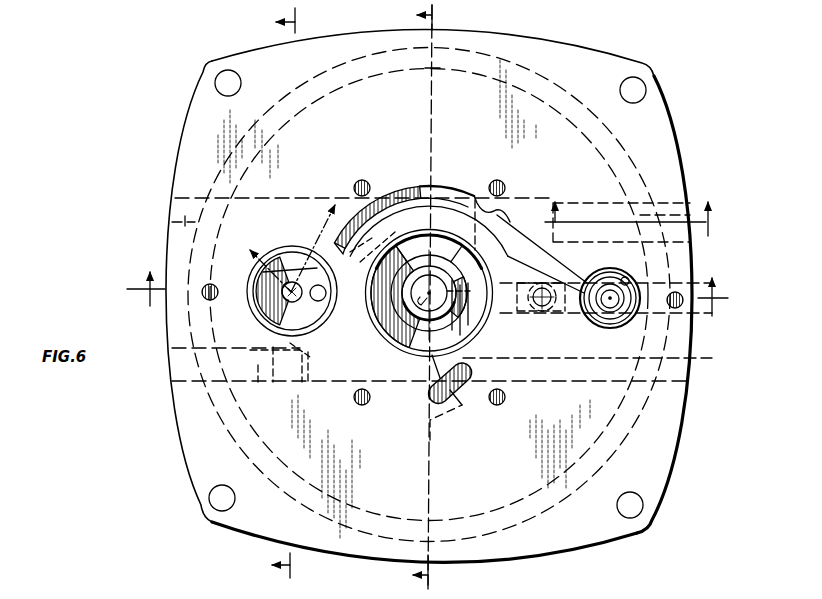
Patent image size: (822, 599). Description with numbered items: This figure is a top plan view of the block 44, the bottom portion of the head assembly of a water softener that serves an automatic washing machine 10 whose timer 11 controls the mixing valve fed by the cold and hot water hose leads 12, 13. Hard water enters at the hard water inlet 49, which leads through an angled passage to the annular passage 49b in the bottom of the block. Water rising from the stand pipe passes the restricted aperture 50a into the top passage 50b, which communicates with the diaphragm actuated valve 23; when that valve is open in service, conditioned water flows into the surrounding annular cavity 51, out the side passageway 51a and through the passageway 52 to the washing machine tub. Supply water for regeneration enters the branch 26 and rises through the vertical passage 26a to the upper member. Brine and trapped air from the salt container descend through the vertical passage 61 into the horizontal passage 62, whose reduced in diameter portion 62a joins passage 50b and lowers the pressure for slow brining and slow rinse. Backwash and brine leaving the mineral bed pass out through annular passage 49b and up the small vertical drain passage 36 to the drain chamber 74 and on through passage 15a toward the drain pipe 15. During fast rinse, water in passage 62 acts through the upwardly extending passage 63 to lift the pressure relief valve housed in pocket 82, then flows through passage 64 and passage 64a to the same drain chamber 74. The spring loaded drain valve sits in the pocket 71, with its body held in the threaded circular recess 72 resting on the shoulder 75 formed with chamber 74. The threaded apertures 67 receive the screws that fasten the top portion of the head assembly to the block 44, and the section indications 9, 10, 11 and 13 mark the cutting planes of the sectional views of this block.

The section line 9- 9 is at (427, 296).
The washing machine 10 is at (298, 297).
The timer 11 is at (442, 299).
The cold water hose lead 12 is at (281, 248).
The hot water hose lead 13 is at (629, 219).
The drain pipe 15 is at (258, 384).
The drain passage 15a is at (306, 352).
The diaphragm actuated valve 23 is at (468, 304).
The supply water branch 26 is at (690, 373).
The vertical passage 26a is at (432, 396).
The vertical drain passage 36 is at (323, 296).
The block 44 is at (186, 447).
The hard water inlet 49 is at (677, 232).
The annular passage 49b is at (590, 223).
The restricted aperture 50a is at (416, 300).
The top passage 50b is at (430, 312).
The annular cavity 51 is at (388, 342).
The side passageway 51a is at (413, 256).
The passageway 52 is at (172, 222).
The vertical passage 61 is at (542, 309).
The horizontal passage 62 is at (568, 309).
The reduced in diameter portion 62a is at (522, 290).
The upwardly extending passage 63 is at (610, 308).
The passage 64 is at (556, 252).
The passage 64a is at (405, 235).
The threaded apertures 67 is at (211, 284).
The pocket 71 is at (291, 303).
The threaded circular recess 72 is at (268, 318).
The drain chamber 74 is at (253, 284).
The shoulder 75 is at (253, 297).
The pocket 82 is at (625, 277).